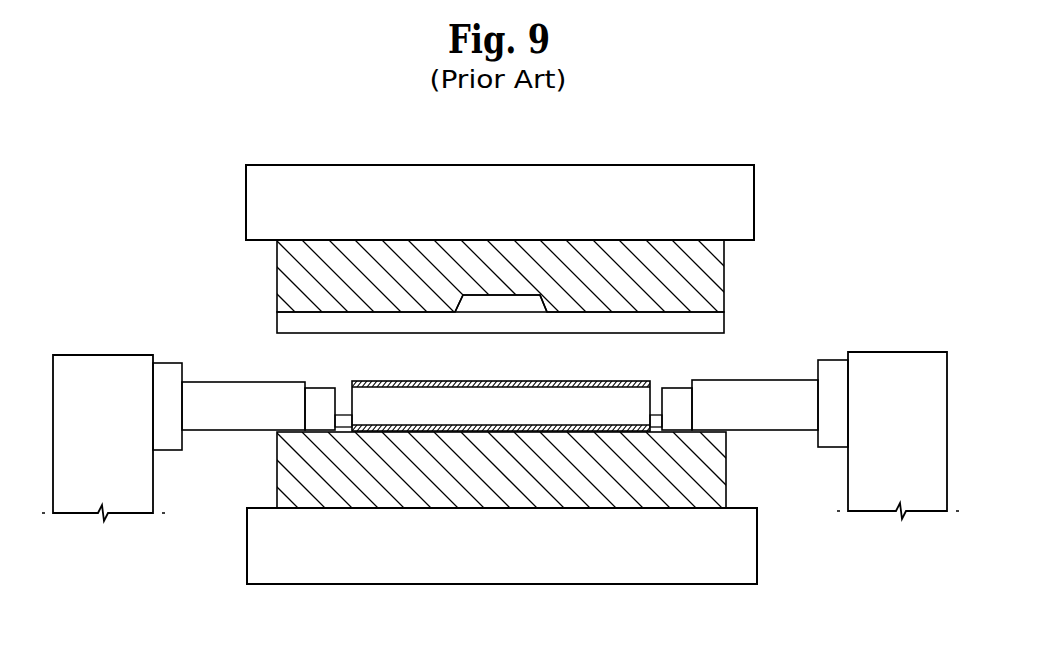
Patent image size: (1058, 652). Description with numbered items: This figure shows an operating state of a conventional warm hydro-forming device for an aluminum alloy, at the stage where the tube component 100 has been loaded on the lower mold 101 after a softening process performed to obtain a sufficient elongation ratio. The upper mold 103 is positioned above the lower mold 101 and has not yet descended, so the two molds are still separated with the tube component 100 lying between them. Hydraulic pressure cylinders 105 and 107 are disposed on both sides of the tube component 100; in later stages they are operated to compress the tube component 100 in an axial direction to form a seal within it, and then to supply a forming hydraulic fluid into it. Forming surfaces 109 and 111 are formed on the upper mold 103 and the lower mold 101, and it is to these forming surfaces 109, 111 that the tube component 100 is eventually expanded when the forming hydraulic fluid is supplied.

The aluminum alloy tube component 100 is at (412, 432).
The lower mold 101 is at (357, 498).
The upper mold 103 is at (612, 245).
The hydraulic pressure cylinder 105 is at (250, 382).
The hydraulic pressure cylinder 107 is at (748, 380).
The forming surface 109 is at (331, 419).
The forming surface 111 is at (458, 314).